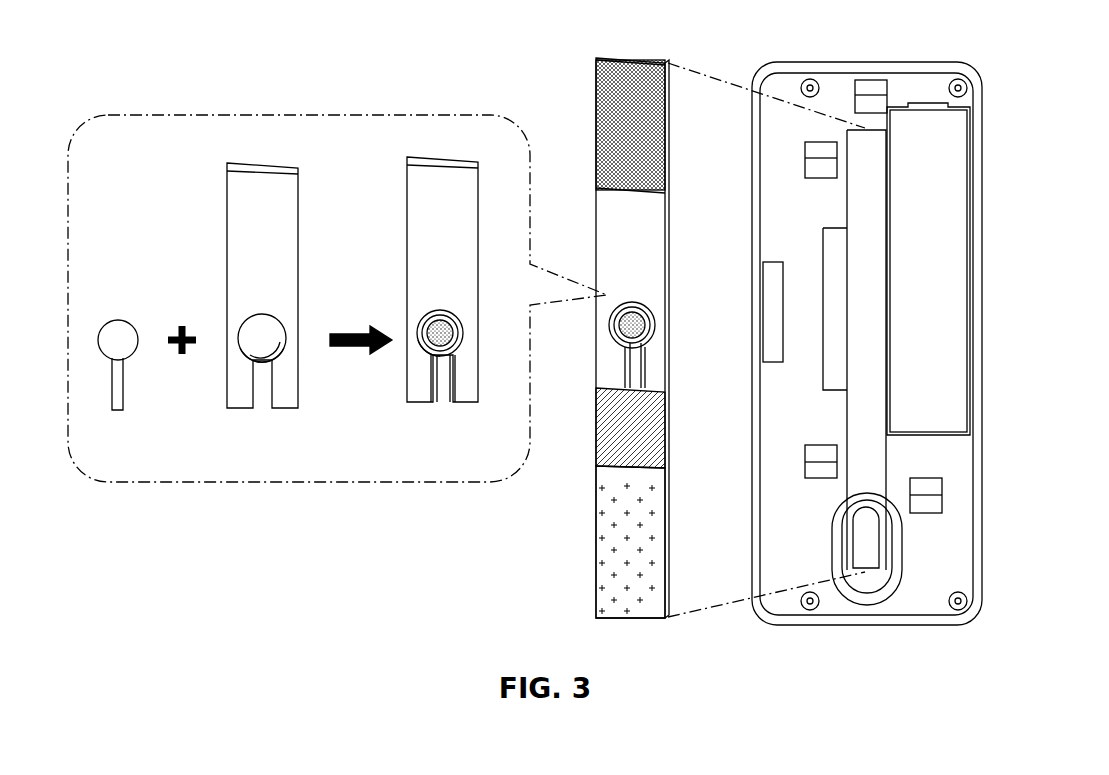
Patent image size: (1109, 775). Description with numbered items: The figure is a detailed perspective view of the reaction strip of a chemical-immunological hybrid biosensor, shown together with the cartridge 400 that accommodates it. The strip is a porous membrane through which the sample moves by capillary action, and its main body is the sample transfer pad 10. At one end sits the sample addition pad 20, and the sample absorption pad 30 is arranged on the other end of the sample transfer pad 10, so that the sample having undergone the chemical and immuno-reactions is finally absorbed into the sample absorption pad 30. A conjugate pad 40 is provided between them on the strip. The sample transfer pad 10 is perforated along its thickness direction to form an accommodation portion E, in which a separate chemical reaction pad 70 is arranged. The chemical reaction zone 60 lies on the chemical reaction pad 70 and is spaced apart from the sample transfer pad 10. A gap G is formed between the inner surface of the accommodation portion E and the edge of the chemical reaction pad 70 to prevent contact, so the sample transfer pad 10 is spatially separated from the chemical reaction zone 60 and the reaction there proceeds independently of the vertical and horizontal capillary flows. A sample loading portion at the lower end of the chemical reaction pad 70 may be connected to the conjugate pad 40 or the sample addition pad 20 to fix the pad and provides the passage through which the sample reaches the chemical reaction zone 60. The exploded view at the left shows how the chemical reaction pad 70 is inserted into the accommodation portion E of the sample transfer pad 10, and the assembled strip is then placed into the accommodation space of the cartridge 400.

The sample transfer pad 10 is at (241, 205).
The sample addition pad 20 is at (655, 546).
The sample absorption pad 30 is at (648, 138).
The conjugate pad 40 is at (650, 428).
The chemical reaction zone 60 is at (455, 334).
The chemical reaction pad 70 is at (118, 390).
The cartridge 400 is at (905, 80).
The accommodation portion E is at (275, 340).
The gap G is at (425, 350).